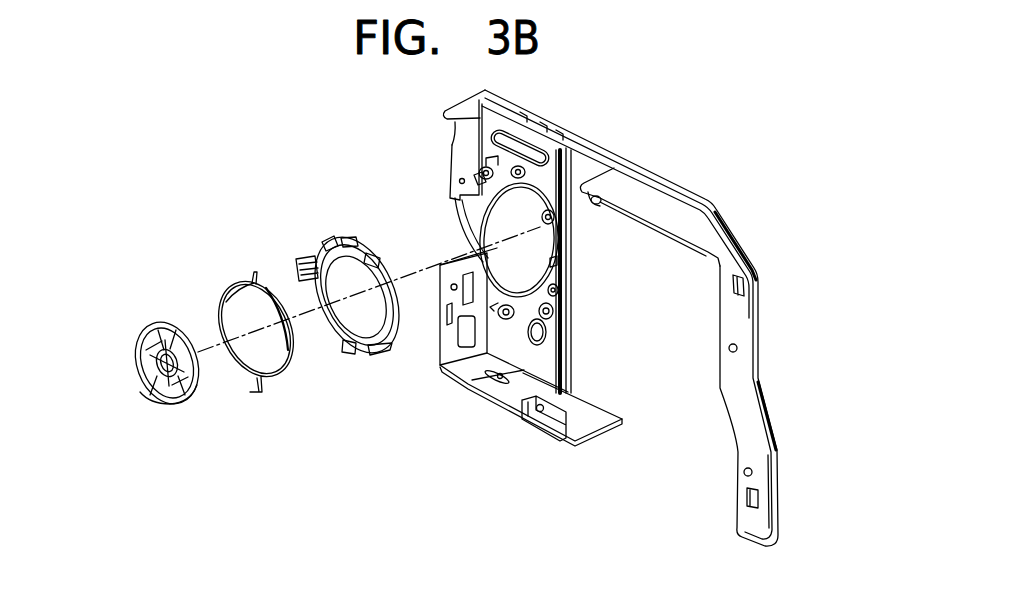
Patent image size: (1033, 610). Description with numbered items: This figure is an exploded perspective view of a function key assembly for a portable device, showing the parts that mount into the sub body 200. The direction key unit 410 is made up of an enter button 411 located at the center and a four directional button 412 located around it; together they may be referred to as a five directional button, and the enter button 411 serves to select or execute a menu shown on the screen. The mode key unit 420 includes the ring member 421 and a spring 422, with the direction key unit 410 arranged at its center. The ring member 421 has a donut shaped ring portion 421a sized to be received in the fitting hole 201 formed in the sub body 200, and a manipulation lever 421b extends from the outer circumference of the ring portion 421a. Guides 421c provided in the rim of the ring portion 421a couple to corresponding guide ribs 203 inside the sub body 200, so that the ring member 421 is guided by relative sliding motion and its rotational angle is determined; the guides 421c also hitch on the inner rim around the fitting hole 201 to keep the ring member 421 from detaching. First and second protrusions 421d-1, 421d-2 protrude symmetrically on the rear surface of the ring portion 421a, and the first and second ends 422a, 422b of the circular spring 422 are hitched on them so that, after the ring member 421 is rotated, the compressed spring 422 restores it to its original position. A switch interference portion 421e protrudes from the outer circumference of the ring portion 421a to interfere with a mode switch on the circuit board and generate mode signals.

The sub body 200 is at (585, 318).
The fitting hole 201 is at (463, 220).
The guide ribs 203 is at (470, 178).
The direction key unit 410 is at (164, 383).
The enter button 411 is at (141, 371).
The four directional button 412 is at (174, 403).
The mode key unit 420 is at (206, 236).
The ring member 421 is at (317, 291).
The ring portion 421a is at (375, 352).
The manipulation lever 421b is at (298, 259).
The guide 421c is at (327, 240).
The first protrusion 421d-1 is at (349, 237).
The second protrusion 421d-2 is at (348, 354).
The switch interference portion 421e is at (376, 256).
The spring 422 is at (230, 345).
The first end 422a is at (224, 307).
The second end 422b is at (251, 392).